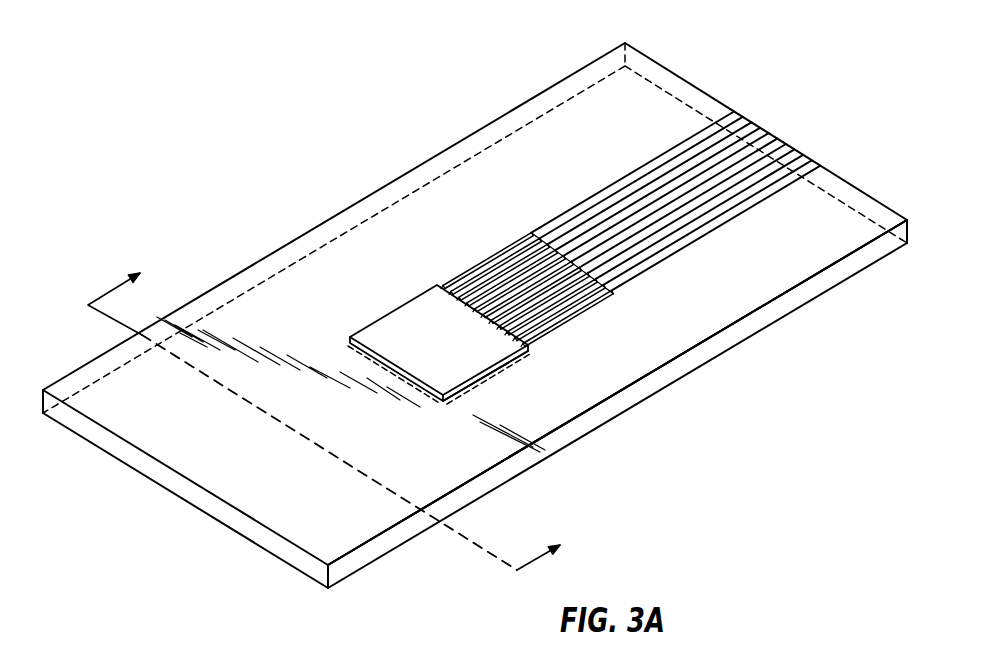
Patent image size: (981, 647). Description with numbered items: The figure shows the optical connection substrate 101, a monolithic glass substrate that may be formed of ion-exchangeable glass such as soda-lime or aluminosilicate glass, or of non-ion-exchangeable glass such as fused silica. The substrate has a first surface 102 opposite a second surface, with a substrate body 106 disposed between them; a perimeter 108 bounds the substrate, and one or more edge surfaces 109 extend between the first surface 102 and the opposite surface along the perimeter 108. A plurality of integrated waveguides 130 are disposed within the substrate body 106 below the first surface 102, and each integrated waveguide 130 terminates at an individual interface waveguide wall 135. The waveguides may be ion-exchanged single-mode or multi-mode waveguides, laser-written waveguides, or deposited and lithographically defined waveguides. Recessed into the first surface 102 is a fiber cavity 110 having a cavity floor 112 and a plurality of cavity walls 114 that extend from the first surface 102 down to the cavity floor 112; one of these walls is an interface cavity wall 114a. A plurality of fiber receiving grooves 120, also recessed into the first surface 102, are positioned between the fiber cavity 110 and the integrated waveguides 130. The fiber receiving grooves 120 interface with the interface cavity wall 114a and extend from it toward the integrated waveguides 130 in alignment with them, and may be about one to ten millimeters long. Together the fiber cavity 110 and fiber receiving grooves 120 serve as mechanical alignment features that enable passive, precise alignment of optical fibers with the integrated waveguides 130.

The optical connection substrate 101 is at (475, 318).
The first surface 102 is at (475, 336).
The substrate body 106 is at (647, 345).
The perimeter 108 is at (458, 488).
The edge surface 109 is at (563, 440).
The fiber cavity 110 is at (460, 353).
The cavity floor 112 is at (447, 351).
The cavity walls 114 is at (452, 354).
The interface cavity wall 114a is at (513, 353).
The fiber receiving grooves 120 is at (483, 252).
The integrated waveguides 130 is at (602, 185).
The interface waveguide wall 135 is at (605, 288).